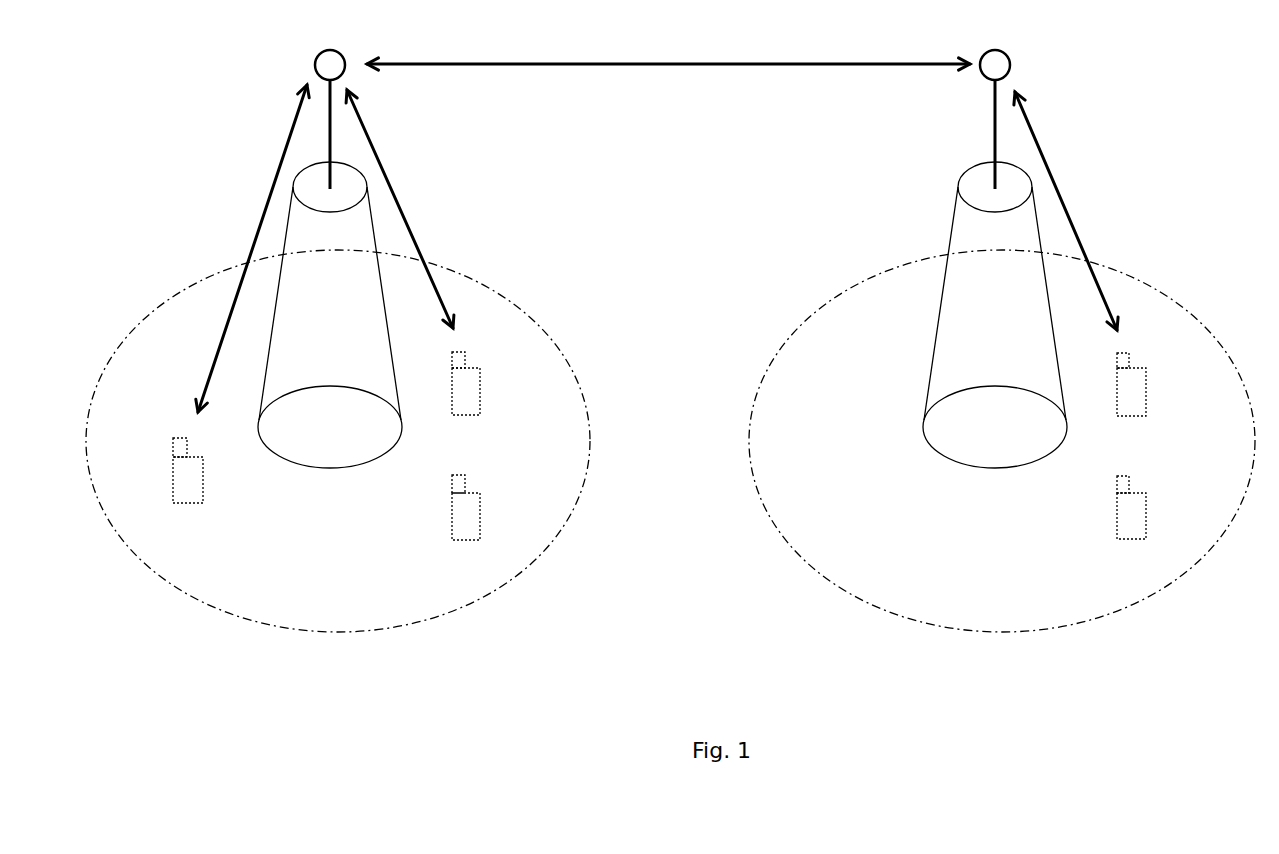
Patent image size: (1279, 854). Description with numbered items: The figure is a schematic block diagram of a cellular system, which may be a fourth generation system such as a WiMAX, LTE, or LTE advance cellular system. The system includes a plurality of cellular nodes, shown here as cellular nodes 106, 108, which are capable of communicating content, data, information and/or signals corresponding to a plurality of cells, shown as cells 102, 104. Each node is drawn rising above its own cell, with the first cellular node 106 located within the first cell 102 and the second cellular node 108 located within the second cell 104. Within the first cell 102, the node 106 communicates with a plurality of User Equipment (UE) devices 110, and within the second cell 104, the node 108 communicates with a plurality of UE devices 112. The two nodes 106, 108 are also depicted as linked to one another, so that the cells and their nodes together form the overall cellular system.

The cell 102 is at (158, 573).
The cell 104 is at (824, 573).
The cellular node 106 is at (330, 468).
The cellular node 108 is at (995, 468).
The User Equipment (UE) devices 110 is at (189, 503).
The User Equipment (UE) devices 112 is at (1146, 517).